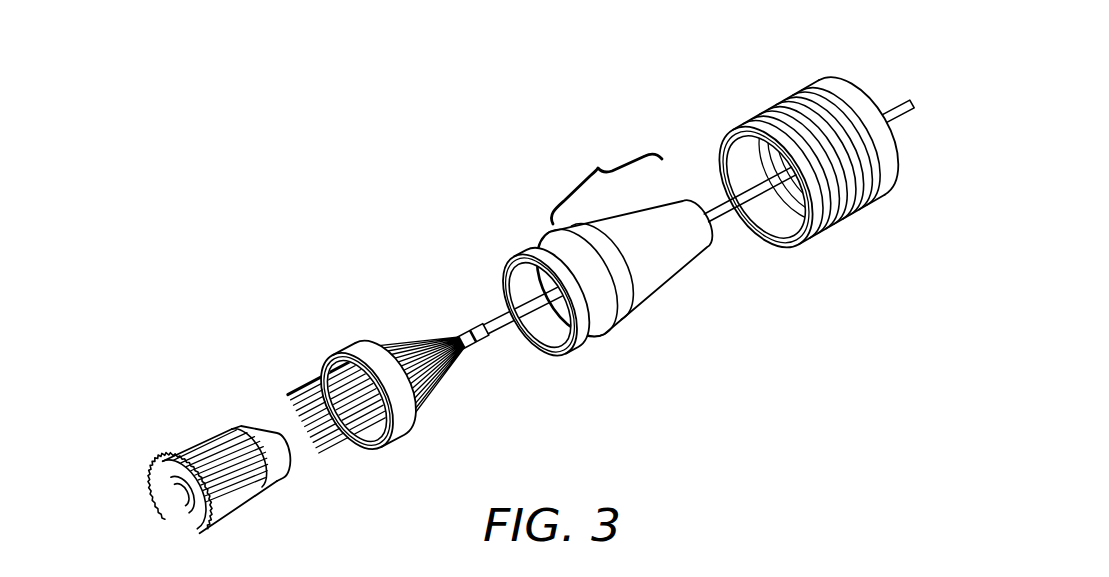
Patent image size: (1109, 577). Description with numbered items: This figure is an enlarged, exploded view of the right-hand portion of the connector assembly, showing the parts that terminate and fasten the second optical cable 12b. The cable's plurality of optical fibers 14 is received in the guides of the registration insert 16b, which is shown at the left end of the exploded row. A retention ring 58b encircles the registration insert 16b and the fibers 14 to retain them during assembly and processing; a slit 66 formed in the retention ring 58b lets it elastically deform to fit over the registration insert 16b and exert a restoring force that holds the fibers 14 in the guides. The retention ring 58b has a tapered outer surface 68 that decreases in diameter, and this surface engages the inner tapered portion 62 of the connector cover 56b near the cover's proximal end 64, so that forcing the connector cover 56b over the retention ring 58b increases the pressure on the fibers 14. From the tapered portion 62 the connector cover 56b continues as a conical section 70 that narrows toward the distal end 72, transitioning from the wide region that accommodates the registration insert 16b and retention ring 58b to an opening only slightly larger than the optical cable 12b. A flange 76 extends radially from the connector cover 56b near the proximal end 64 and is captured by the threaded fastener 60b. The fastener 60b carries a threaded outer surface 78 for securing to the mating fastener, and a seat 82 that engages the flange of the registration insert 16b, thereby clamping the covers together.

The optical cable 12b is at (906, 114).
The optical fibers 14 is at (333, 450).
The registration insert 16b is at (167, 441).
The connector cover 56b is at (600, 312).
The retention ring 58b is at (338, 352).
The threaded fastener 60b is at (833, 88).
The inner tapered portion 62 is at (549, 332).
The proximal end 64 is at (514, 342).
The slit 66 is at (407, 424).
The tapered outer surface 68 is at (370, 352).
The conical section 70 is at (606, 182).
The distal end 72 is at (730, 246).
The flange 76 is at (512, 258).
The threaded outer surface 78 is at (785, 110).
The seat 82 is at (722, 173).